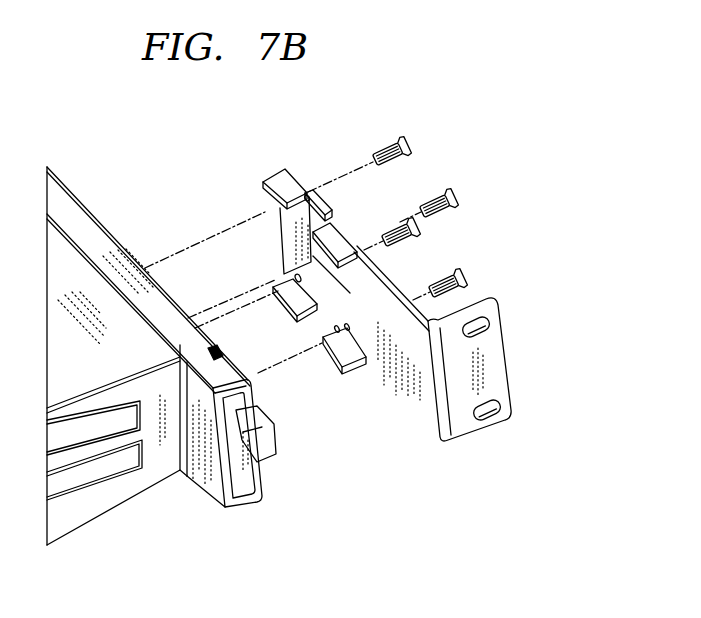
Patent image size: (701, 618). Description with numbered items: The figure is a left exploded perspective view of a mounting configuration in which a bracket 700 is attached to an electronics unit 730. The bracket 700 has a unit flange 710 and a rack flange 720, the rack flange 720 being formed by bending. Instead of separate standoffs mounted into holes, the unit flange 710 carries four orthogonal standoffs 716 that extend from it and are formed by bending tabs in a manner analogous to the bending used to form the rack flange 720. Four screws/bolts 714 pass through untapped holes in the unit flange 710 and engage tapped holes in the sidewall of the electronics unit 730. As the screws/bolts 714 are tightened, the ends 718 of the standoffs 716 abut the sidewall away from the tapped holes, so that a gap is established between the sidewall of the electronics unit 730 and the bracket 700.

The bracket 700 is at (477, 452).
The unit flange 710 is at (281, 249).
The screws/bolts 714 is at (416, 146).
The standoffs 716 is at (281, 177).
The ends of the standoffs 718 is at (262, 190).
The rack flange 720 is at (498, 358).
The electronics unit 730 is at (146, 517).